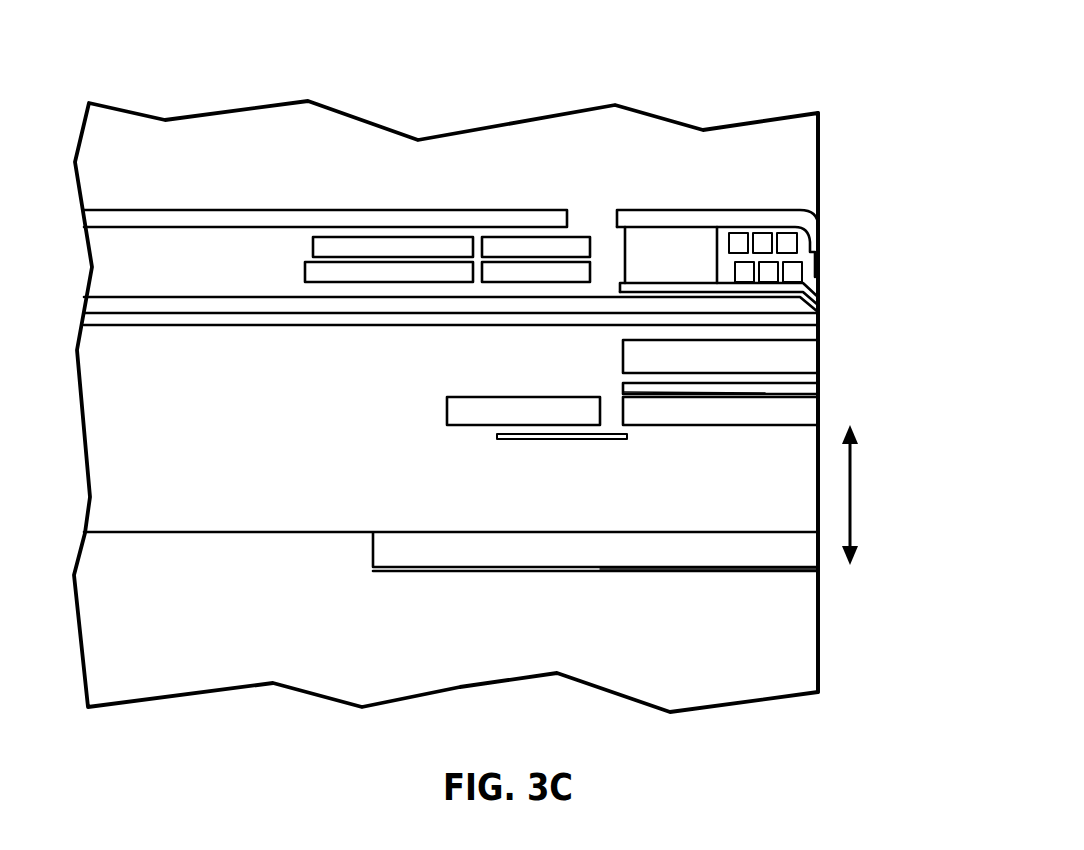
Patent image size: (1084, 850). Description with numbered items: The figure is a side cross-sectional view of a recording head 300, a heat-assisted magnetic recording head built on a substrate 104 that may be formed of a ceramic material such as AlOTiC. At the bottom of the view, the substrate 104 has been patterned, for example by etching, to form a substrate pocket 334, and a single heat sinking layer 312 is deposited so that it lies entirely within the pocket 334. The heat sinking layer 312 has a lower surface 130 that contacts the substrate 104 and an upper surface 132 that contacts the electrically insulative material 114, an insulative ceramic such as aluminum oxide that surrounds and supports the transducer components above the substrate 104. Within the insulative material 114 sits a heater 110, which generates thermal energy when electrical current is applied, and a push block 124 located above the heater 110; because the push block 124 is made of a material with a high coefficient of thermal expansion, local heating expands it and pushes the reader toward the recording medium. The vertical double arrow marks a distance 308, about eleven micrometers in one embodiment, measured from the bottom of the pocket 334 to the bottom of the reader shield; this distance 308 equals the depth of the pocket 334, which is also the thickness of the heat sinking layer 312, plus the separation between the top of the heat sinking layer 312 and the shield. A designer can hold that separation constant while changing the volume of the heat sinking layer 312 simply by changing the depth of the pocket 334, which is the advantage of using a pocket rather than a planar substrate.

The recording head 300 is at (866, 72).
The substrate 104 is at (138, 662).
The electrically insulative material 114 is at (102, 366).
The push block 124 is at (458, 411).
The upper surface 132 is at (437, 532).
The heater 110 is at (615, 438).
The lower surface 130 is at (717, 570).
The heat sinking layer 312 is at (765, 557).
The substrate pocket 334 is at (795, 570).
The distance 308 is at (853, 505).